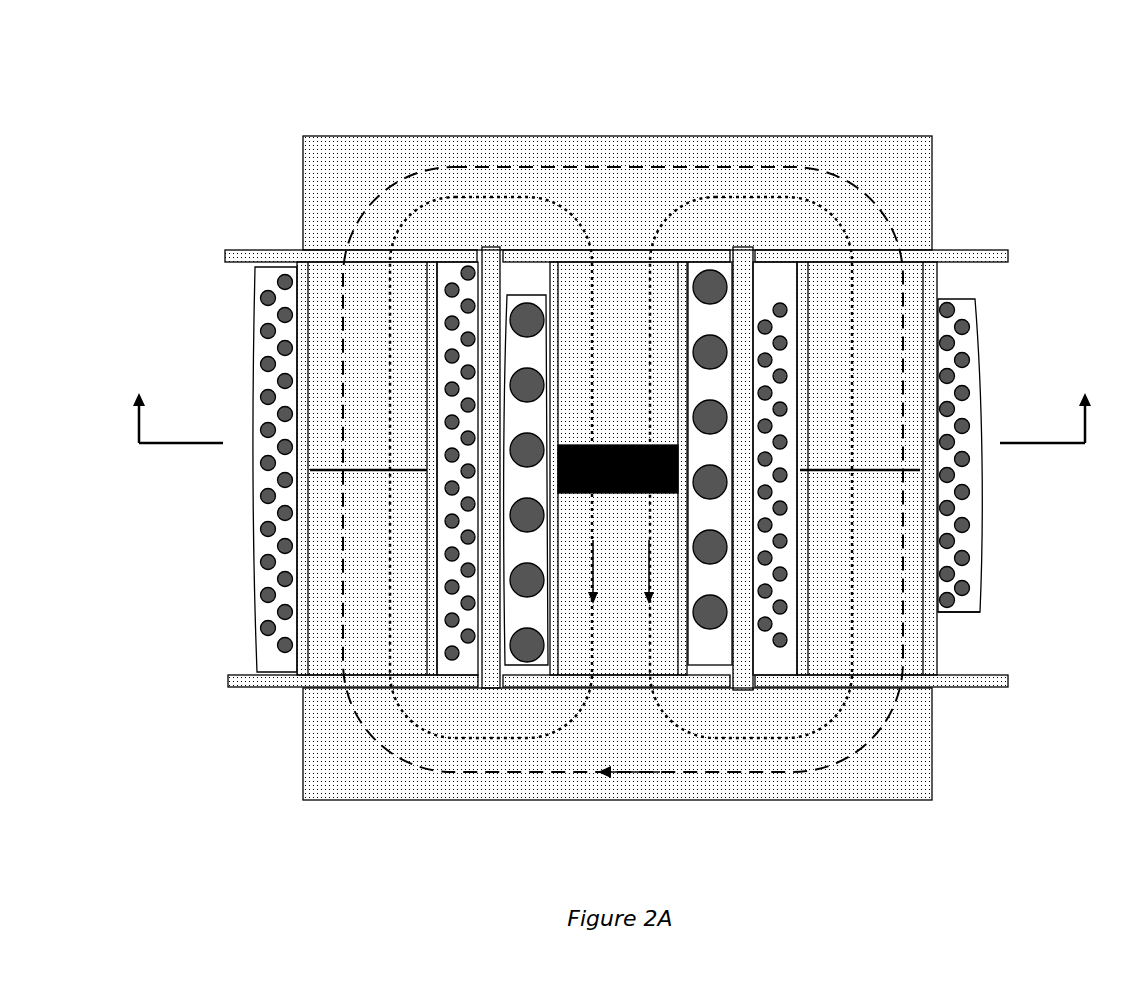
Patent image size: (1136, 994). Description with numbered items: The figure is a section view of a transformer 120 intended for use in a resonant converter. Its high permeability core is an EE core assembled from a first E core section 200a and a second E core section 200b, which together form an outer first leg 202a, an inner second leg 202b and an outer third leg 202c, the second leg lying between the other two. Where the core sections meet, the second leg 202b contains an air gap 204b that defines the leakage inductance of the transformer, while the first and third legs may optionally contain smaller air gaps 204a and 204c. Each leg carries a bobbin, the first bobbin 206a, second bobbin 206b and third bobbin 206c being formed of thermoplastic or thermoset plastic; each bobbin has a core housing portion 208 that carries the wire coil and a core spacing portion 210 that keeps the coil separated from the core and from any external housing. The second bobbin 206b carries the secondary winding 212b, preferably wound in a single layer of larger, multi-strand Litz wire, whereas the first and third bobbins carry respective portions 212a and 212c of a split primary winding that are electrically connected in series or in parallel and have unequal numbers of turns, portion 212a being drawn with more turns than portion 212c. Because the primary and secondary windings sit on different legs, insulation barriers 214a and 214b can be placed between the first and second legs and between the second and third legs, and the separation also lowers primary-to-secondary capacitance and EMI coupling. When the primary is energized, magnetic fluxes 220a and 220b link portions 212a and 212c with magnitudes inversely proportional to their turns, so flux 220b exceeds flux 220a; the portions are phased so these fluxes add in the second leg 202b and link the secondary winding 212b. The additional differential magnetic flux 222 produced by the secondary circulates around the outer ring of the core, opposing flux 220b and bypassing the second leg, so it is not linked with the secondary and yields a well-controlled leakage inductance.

The transformer 120 is at (1055, 118).
The first E core section 200a is at (907, 136).
The second E core section 200b is at (932, 770).
The first leg 202a is at (375, 315).
The second leg 202b is at (615, 643).
The third leg 202c is at (877, 290).
The air gap 204a is at (385, 470).
The air gap 204b is at (645, 445).
The air gap 204c is at (887, 470).
The first bobbin 206a is at (252, 250).
The second bobbin 206b is at (629, 250).
The third bobbin 206c is at (986, 250).
The core housing portion 208 is at (941, 612).
The core spacing portion 210 is at (248, 680).
The primary winding portion 212a is at (252, 430).
The secondary winding 212b is at (530, 660).
The primary winding portion 212c is at (984, 408).
The insulation barrier 214a is at (490, 688).
The insulation barrier 214b is at (745, 690).
The magnetic flux 220a is at (467, 195).
The magnetic flux 220b is at (757, 197).
The differential magnetic flux 222 is at (592, 167).